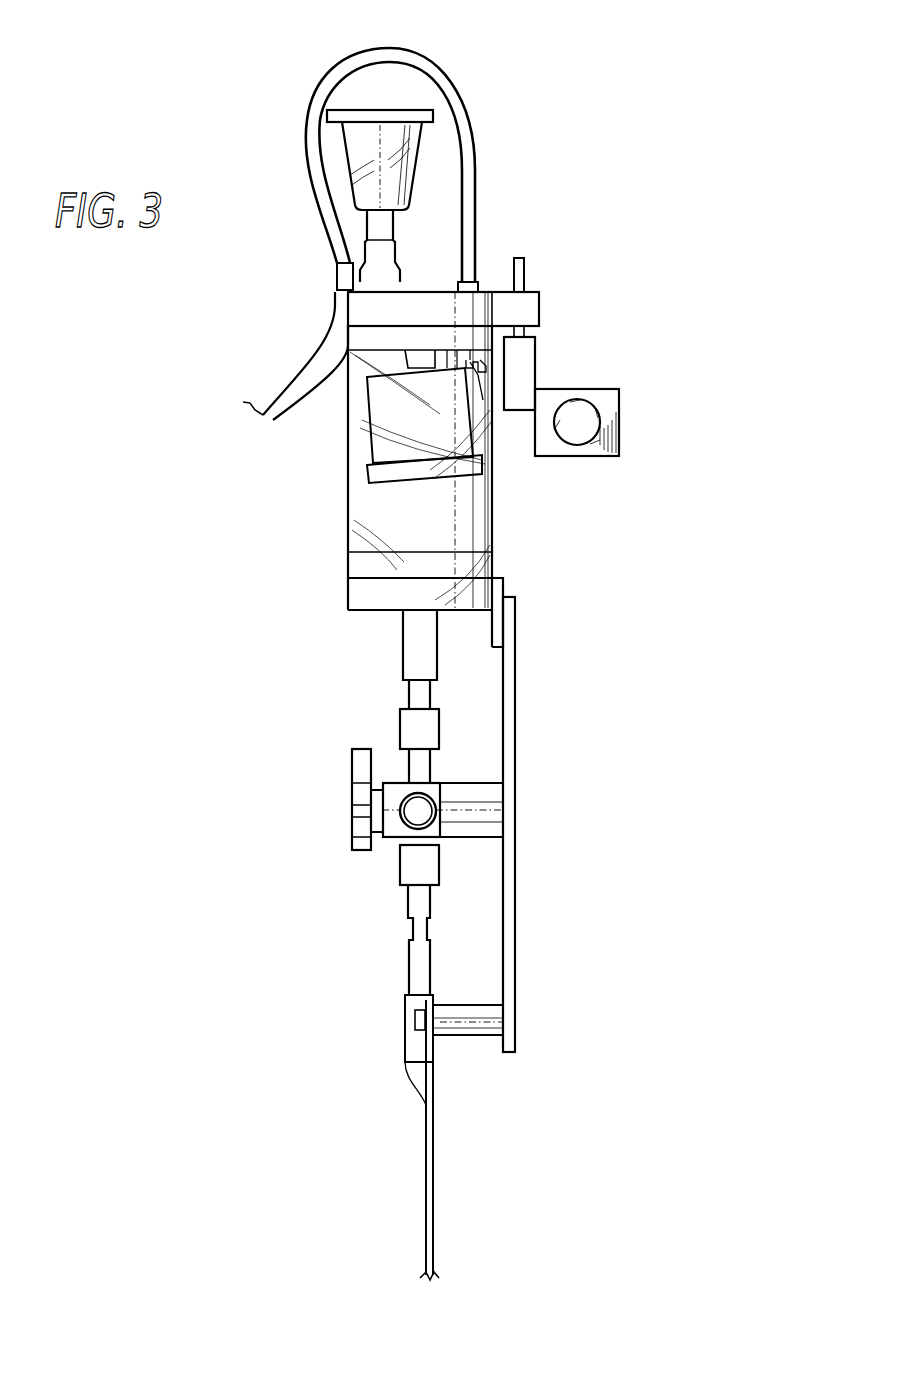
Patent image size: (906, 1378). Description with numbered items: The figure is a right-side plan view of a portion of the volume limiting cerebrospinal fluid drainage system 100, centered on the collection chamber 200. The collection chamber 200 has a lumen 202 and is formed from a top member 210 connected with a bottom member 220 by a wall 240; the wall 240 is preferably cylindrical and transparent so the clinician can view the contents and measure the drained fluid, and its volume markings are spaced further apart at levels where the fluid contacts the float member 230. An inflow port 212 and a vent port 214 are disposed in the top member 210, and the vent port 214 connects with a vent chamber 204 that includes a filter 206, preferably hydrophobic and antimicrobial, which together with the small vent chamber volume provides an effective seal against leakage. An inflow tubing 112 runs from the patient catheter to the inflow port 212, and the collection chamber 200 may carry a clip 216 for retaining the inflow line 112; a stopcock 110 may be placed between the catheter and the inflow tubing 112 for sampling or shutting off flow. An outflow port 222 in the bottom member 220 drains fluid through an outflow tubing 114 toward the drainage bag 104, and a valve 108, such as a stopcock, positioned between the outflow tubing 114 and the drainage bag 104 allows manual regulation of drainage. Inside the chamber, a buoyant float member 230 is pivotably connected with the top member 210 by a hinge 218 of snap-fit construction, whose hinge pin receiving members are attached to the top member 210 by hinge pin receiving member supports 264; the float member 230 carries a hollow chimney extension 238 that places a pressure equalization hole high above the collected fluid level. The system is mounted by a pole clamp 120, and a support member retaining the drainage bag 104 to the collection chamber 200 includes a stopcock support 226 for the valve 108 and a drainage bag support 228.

The volume limiting cerebrospinal fluid drainage system 100 is at (720, 220).
The drainage bag 104 is at (434, 1215).
The valve 108 is at (351, 797).
The stopcock 110 is at (399, 730).
The inflow tubing 112 is at (327, 63).
The outflow tubing 114 is at (408, 693).
The pole clamp 120 is at (620, 408).
The collection chamber 200 is at (517, 477).
The lumen 202 is at (470, 525).
The vent chamber 204 is at (400, 173).
The filter 206 is at (400, 110).
The top member 210 is at (432, 300).
The inflow port 212 is at (478, 290).
The vent port 214 is at (362, 260).
The clip 216 is at (336, 300).
The hinge 218 is at (485, 383).
The bottom member 220 is at (347, 593).
The outflow port 222 is at (436, 645).
The stopcock support 226 is at (488, 807).
The drainage bag support 228 is at (414, 1020).
The float member 230 is at (392, 422).
The hollow chimney extension 238 is at (403, 360).
The wall 240 is at (347, 472).
The hinge pin receiving member supports 264 is at (478, 358).